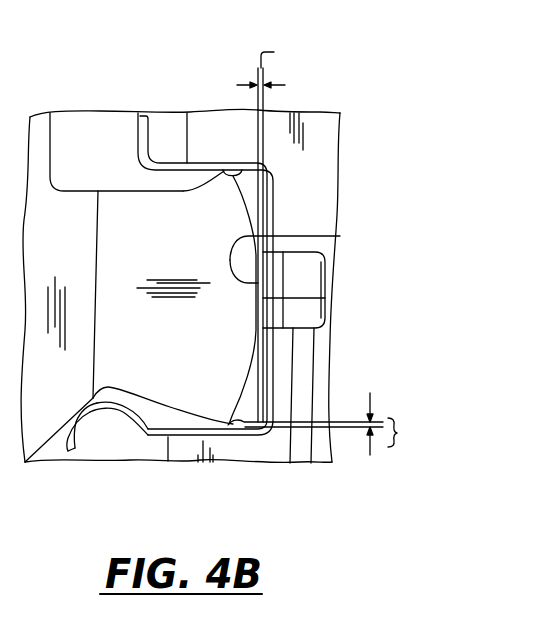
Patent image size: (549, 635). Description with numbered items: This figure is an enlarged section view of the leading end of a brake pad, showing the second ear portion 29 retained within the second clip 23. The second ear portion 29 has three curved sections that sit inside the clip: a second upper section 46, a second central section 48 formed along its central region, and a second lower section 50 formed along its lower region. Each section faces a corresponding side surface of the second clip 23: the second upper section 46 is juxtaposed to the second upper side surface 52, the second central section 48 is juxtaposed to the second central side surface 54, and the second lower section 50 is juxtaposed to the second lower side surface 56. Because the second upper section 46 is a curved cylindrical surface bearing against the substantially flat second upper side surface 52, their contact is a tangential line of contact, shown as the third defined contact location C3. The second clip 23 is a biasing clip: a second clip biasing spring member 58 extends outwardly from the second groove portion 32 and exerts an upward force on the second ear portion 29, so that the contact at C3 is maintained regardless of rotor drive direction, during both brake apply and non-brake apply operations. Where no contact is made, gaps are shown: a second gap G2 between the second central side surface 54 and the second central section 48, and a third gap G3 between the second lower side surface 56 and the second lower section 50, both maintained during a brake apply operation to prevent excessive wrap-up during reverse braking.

The second clip 23 is at (138, 113).
The second ear portion 29 is at (145, 213).
The second groove portion 32 is at (263, 432).
The second upper section 46 is at (198, 187).
The second central section 48 is at (325, 298).
The second lower section 50 is at (212, 405).
The second upper side surface 52 is at (247, 163).
The second central side surface 54 is at (340, 236).
The second lower side surface 56 is at (236, 435).
The second clip biasing spring member 58 is at (95, 413).
The third defined contact location C3 is at (219, 190).
The second gap G2 is at (274, 64).
The third gap G3 is at (386, 436).